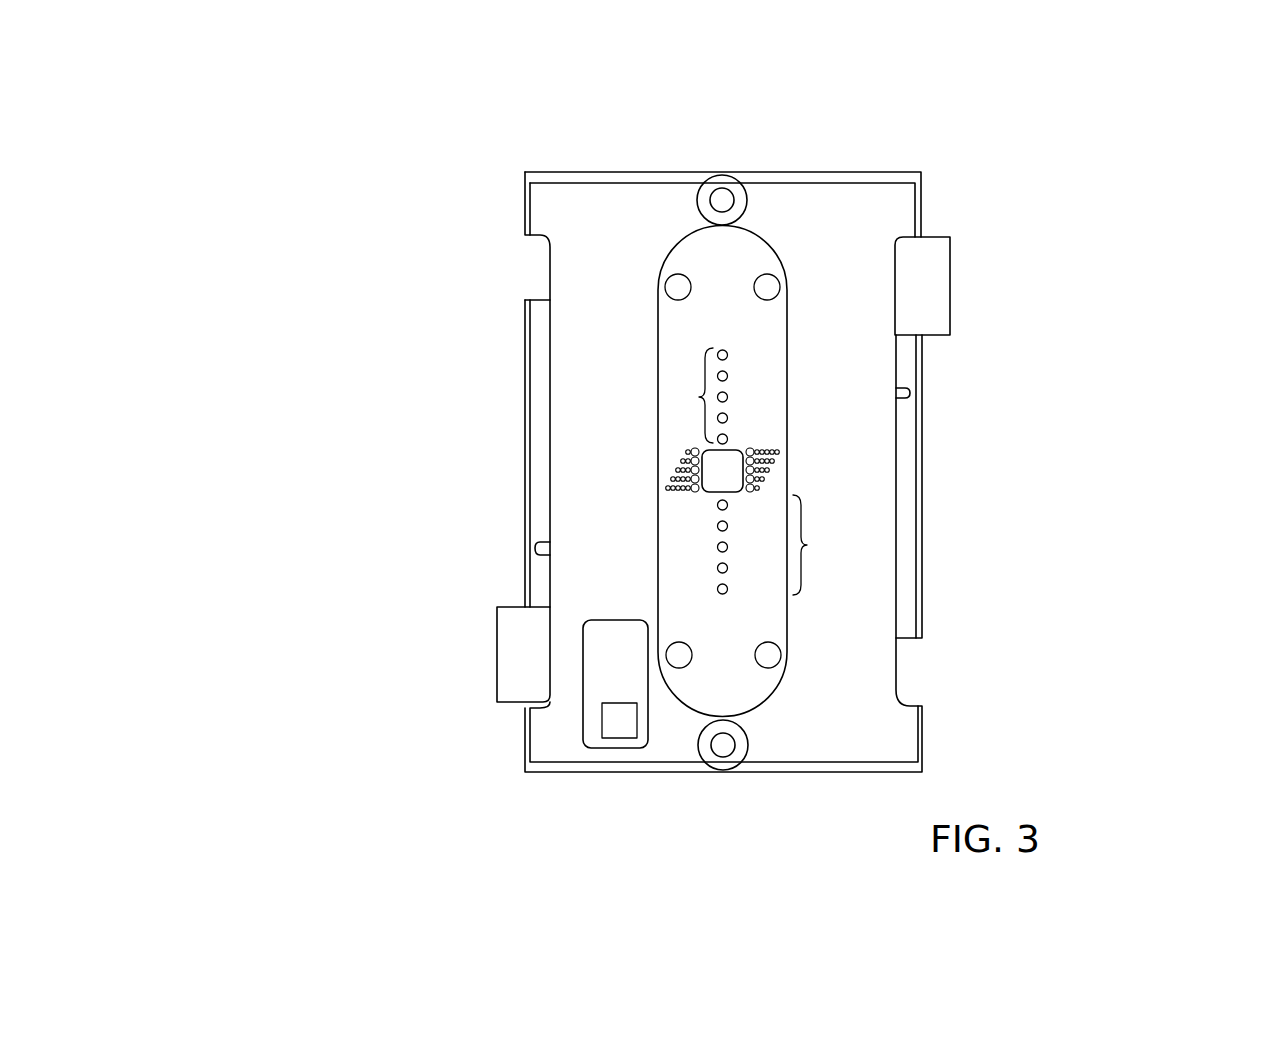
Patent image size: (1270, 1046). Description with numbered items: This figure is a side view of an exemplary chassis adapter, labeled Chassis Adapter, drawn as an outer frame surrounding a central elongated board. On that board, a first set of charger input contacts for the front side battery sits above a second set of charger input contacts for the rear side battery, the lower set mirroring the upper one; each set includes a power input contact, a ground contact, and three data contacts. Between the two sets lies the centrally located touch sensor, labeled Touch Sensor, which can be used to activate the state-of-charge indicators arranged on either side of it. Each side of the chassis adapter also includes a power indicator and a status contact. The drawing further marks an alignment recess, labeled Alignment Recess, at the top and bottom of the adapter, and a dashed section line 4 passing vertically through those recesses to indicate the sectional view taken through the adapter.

The chassis adapter Chassis Adapter is at (647, 158).
The alignment recess Alignment Recess is at (724, 200).
The touch sensor Touch Sensor is at (722, 473).
The section line 4- 4 is at (723, 170).